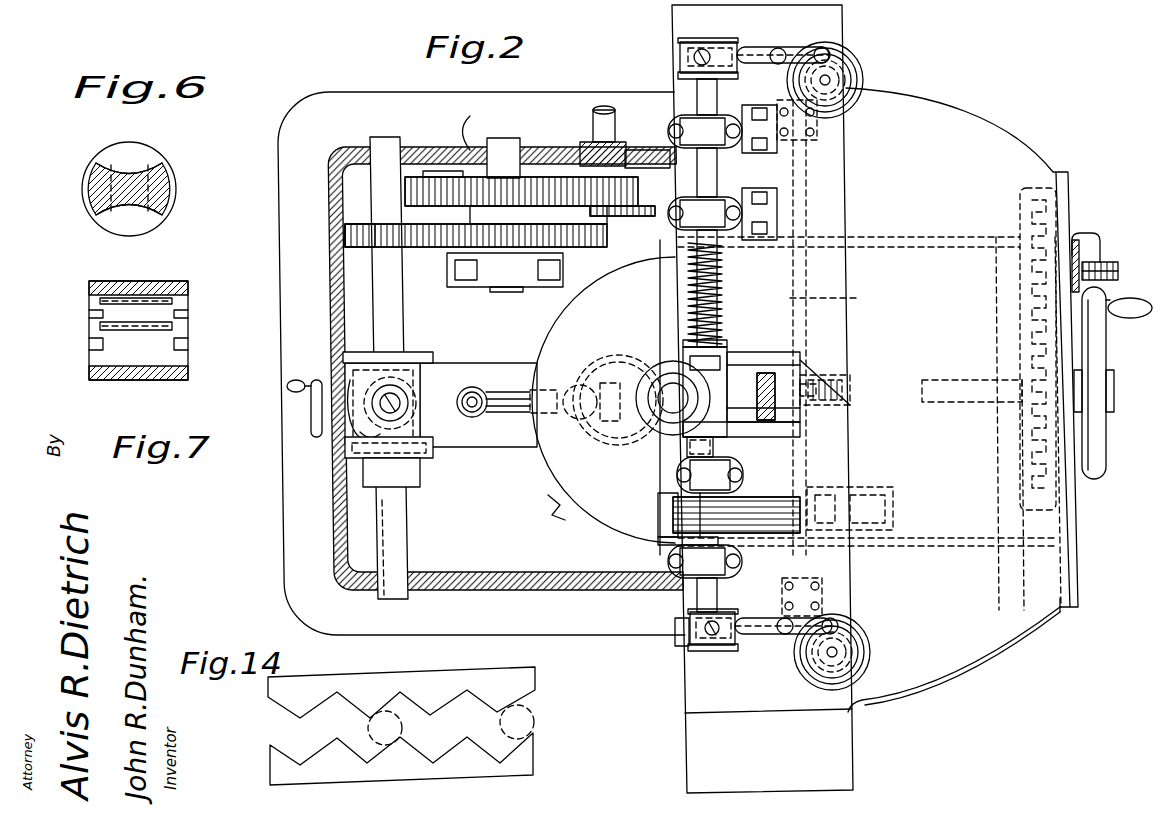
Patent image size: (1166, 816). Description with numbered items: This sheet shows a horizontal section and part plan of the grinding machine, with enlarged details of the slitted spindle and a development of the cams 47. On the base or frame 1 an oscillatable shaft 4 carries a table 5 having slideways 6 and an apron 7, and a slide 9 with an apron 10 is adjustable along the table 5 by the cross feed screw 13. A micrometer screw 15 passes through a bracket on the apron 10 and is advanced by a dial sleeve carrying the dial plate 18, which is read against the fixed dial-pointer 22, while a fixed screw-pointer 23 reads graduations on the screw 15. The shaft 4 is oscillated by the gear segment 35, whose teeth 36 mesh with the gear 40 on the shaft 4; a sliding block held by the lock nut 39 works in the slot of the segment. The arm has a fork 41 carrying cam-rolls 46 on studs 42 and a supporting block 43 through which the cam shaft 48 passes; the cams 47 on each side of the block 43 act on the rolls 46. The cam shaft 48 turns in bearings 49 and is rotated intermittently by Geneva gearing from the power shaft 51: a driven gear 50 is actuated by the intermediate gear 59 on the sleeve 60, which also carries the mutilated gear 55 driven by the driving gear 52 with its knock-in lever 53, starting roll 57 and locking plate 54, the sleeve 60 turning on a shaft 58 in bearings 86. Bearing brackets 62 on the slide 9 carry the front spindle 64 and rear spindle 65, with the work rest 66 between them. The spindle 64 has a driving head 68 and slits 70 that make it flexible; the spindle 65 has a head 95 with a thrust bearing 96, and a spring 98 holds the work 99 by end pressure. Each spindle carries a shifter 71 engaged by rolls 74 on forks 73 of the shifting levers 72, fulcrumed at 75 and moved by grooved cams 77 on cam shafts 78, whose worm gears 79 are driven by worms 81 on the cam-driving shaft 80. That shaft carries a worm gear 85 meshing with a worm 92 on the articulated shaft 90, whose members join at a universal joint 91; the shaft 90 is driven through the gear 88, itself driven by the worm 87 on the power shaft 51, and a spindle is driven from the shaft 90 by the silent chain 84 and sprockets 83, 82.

In FIG. 2, the base or frame 1 is at (338, 104).
In FIG. 2, the oscillatable shaft 4 is at (648, 440).
In FIG. 2, the table 5 is at (918, 240).
In FIG. 2, the slideways 6 is at (954, 545).
In FIG. 2, the apron 7 is at (995, 457).
In FIG. 2, the slide 9 is at (955, 685).
In FIG. 2, the apron 10 is at (1072, 600).
In FIG. 2, the cross feed screw 13 is at (962, 382).
In FIG. 2, the micrometer screw 15 is at (1112, 262).
In FIG. 2, the dial plate 18 is at (1106, 290).
In FIG. 2, the dial-pointer 22 is at (1078, 240).
In FIG. 2, the screw-pointer 23 is at (1098, 236).
In FIG. 2, the oscillating arm and gear segment 35 is at (515, 446).
In FIG. 2, the teeth 36 is at (552, 512).
In FIG. 2, the lock nut 39 is at (498, 375).
In FIG. 2, the gear 40 is at (659, 397).
In FIG. 2, the fork 41 is at (405, 372).
In FIG. 2, the studs 42 is at (420, 455).
In FIG. 2, the supporting block 43 is at (345, 478).
In FIG. 2, the cam-rolls 46 is at (408, 403).
In FIG. 14, the cam-rolls 46 is at (436, 688).
In FIG. 2, the cams 47 is at (410, 350).
In FIG. 14, the cams 47 is at (372, 690).
In FIG. 2, the cam shaft 48 is at (405, 536).
In FIG. 2, the bearings 49 is at (408, 145).
In FIG. 2, the driven gear 50 is at (345, 240).
In FIG. 2, the power shaft 51 is at (590, 372).
In FIG. 2, the driving gear 52 is at (636, 170).
In FIG. 2, the knock-in lever 53 is at (718, 198).
In FIG. 2, the locking plate 54 is at (594, 142).
In FIG. 2, the mutilated gear 55 is at (512, 178).
In FIG. 2, the starting roll 57 is at (600, 207).
In FIG. 2, the shaft 58 is at (500, 138).
In FIG. 2, the intermediate gear 59 is at (455, 250).
In FIG. 2, the sleeve 60 is at (608, 235).
In FIG. 2, the bearing brackets 62 is at (712, 118).
In FIG. 2, the front driving spindle 64 is at (680, 640).
In FIG. 6, the front driving spindle 64 is at (90, 187).
In FIG. 7, the front driving spindle 64 is at (172, 348).
In FIG. 2, the rear driving spindle 65 is at (778, 150).
In FIG. 2, the work rest 66 is at (777, 385).
In FIG. 2, the driving head 68 is at (760, 432).
In FIG. 2, the slits 70 is at (690, 445).
In FIG. 6, the slits 70 is at (148, 158).
In FIG. 7, the slits 70 is at (89, 322).
In FIG. 2, the shifter 71 is at (690, 42).
In FIG. 2, the spindle shifting levers 72 is at (820, 46).
In FIG. 2, the forks 73 is at (748, 46).
In FIG. 2, the rolls 74 is at (732, 46).
In FIG. 2, the fulcrum 75 is at (778, 47).
In FIG. 2, the cams 77 is at (858, 64).
In FIG. 2, the cam shafts 78 is at (846, 80).
In FIG. 2, the worm gears 79 is at (850, 102).
In FIG. 2, the cam-driving shaft 80 is at (841, 327).
In FIG. 2, the worms 81 is at (782, 108).
In FIG. 2, the sprocket 82 is at (690, 535).
In FIG. 2, the sprocket 83 is at (890, 488).
In FIG. 2, the silent chain 84 is at (770, 505).
In FIG. 2, the worm gear 85 is at (845, 368).
In FIG. 2, the bearings 86 is at (466, 123).
In FIG. 2, the worm 87 is at (592, 430).
In FIG. 2, the gear 88 is at (712, 650).
In FIG. 2, the articulated shaft 90 is at (855, 385).
In FIG. 2, the universal joint 91 is at (775, 375).
In FIG. 2, the worm 92 is at (848, 408).
In FIG. 2, the driving head 95 is at (726, 345).
In FIG. 2, the thrust bearing 96 is at (722, 340).
In FIG. 2, the spring 98 is at (690, 260).
In FIG. 2, the work 99 is at (724, 358).